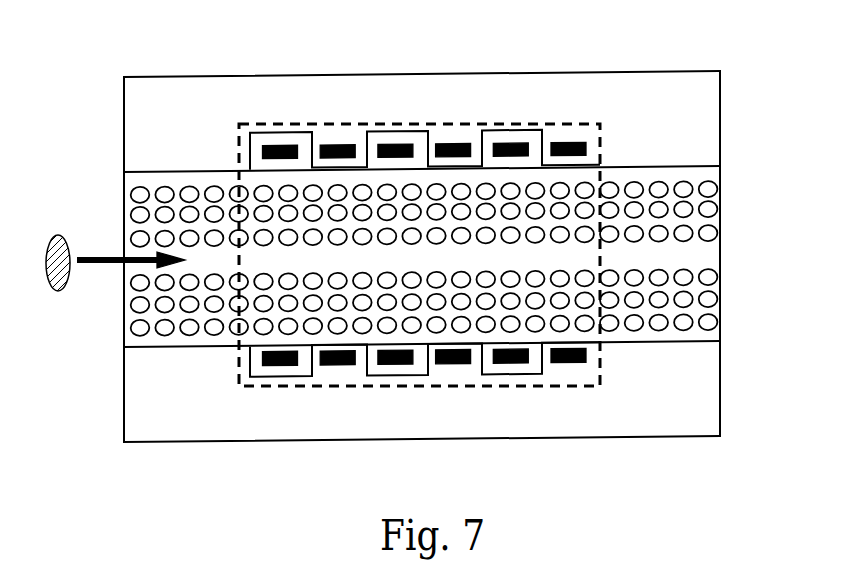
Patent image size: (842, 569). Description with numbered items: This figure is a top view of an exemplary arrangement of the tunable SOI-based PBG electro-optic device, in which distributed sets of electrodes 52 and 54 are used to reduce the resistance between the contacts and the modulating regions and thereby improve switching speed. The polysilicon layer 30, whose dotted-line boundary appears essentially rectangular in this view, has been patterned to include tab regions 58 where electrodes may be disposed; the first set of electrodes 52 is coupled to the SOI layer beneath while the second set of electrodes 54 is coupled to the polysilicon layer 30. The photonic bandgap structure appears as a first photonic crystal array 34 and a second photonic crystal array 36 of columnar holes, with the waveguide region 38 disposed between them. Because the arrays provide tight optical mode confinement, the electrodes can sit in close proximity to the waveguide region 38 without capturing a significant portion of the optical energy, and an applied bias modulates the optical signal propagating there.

The polysilicon layer 30 is at (451, 256).
The first photonic crystal array 34 is at (727, 180).
The second photonic crystal array 36 is at (728, 275).
The waveguide region 38 is at (693, 255).
The first set of electrodes 52 is at (573, 145).
The second set of electrodes 54 is at (397, 147).
The tab regions 58 is at (413, 142).